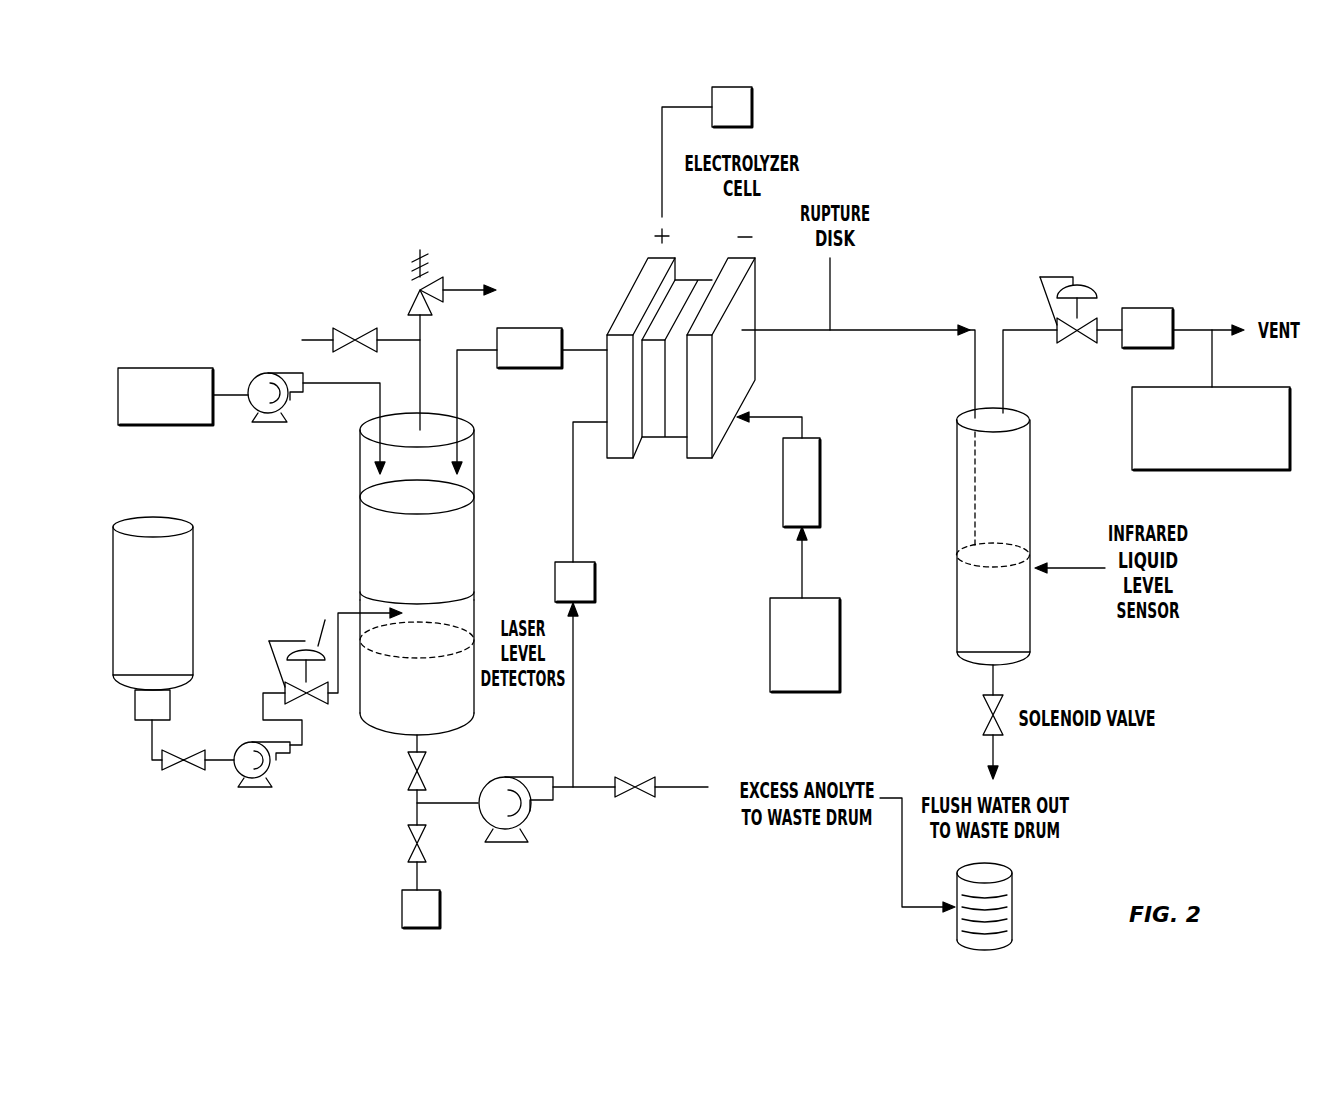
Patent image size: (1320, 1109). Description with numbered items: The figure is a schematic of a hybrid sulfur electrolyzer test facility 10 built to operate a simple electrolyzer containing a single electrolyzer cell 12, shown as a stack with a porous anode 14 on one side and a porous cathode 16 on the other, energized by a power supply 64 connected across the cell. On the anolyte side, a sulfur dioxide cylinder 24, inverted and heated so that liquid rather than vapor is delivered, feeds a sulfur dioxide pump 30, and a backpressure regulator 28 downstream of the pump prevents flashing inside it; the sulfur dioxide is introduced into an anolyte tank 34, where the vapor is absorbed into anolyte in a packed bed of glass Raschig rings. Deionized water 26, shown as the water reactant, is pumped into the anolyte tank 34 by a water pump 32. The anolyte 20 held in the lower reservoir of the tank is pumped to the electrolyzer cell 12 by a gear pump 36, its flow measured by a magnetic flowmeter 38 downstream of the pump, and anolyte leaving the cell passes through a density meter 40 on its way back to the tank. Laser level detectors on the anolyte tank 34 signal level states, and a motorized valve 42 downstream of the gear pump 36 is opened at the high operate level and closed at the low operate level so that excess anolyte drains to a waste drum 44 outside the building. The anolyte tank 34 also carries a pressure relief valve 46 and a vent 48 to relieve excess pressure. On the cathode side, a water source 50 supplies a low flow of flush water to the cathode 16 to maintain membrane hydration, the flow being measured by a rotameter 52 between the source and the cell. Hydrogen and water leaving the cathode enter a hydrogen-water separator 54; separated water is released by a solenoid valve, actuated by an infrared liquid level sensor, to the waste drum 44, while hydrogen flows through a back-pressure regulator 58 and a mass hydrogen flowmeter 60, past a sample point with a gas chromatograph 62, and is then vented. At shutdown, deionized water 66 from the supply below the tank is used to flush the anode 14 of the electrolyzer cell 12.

The hybrid sulfur electrolyzer test facility 10 is at (256, 153).
The electrolyzer cell 12 is at (683, 327).
The anode 14 is at (637, 345).
The cathode 16 is at (755, 358).
The anolyte 20 is at (439, 675).
The sulfur dioxide cylinder 24 is at (139, 586).
The deionized water 26 is at (165, 376).
The backpressure regulator 28 is at (291, 614).
The sulfur dioxide pump 30 is at (278, 781).
The water pump 32 is at (291, 415).
The anolyte tank 34 is at (436, 508).
The gear pump 36 is at (528, 827).
The magnetic flowmeter 38 is at (627, 564).
The density meter 40 is at (533, 352).
The motorized valve 42 is at (648, 800).
The waste drum 44 is at (1007, 906).
The pressure relief valve 46 is at (419, 253).
The vent 48 is at (317, 323).
The water source 50 is at (828, 660).
The rotameter 52 is at (828, 469).
The hydrogen-water separator 54 is at (962, 497).
The back-pressure regulator 58 is at (1063, 300).
The mass hydrogen flowmeter 60 is at (1163, 321).
The gas chromatograph 62 is at (1211, 467).
The power supply 64 is at (767, 105).
The deionized water 66 is at (397, 909).